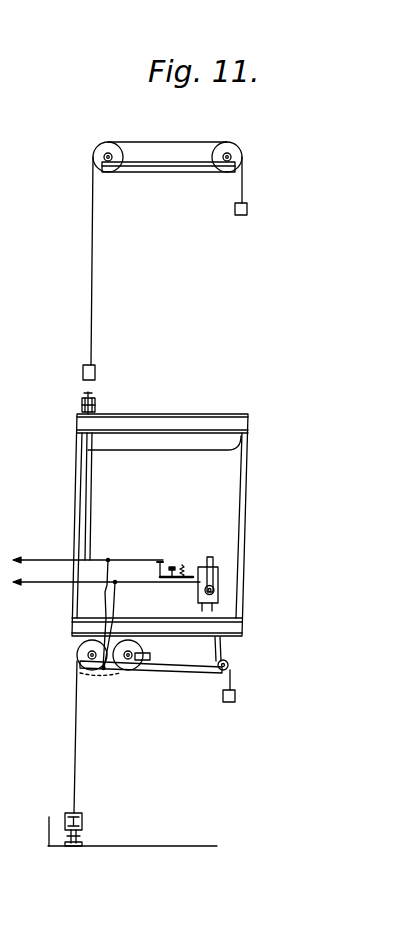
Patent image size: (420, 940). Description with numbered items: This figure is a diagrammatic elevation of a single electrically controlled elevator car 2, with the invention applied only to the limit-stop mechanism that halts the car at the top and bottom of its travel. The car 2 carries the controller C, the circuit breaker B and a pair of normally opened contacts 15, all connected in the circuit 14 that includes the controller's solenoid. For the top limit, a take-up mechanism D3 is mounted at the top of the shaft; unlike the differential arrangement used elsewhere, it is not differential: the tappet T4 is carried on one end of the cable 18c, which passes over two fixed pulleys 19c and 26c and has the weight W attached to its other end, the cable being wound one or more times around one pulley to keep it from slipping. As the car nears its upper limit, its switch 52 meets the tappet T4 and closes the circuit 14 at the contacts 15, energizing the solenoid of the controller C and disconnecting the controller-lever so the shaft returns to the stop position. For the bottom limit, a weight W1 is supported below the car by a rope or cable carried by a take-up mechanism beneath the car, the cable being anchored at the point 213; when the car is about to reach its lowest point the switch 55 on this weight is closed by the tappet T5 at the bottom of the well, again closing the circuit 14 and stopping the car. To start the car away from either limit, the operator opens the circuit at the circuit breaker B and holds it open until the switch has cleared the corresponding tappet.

The take-up mechanism D3 is at (157, 407).
The fixed pulley 19c is at (104, 142).
The fixed pulley 26c is at (236, 149).
The take-up weight W is at (235, 210).
The cable 18c is at (92, 308).
The tappet T4 is at (83, 373).
The spindle 52 is at (92, 393).
The contacts 15 is at (95, 407).
The frame 2 is at (222, 608).
The circuit 14 is at (122, 559).
The circuit breaker B is at (175, 559).
The controller C is at (208, 575).
The lower pulley 213 is at (104, 673).
The weight W1 is at (80, 814).
The spindle 55 is at (80, 835).
The tappet T5 is at (78, 848).